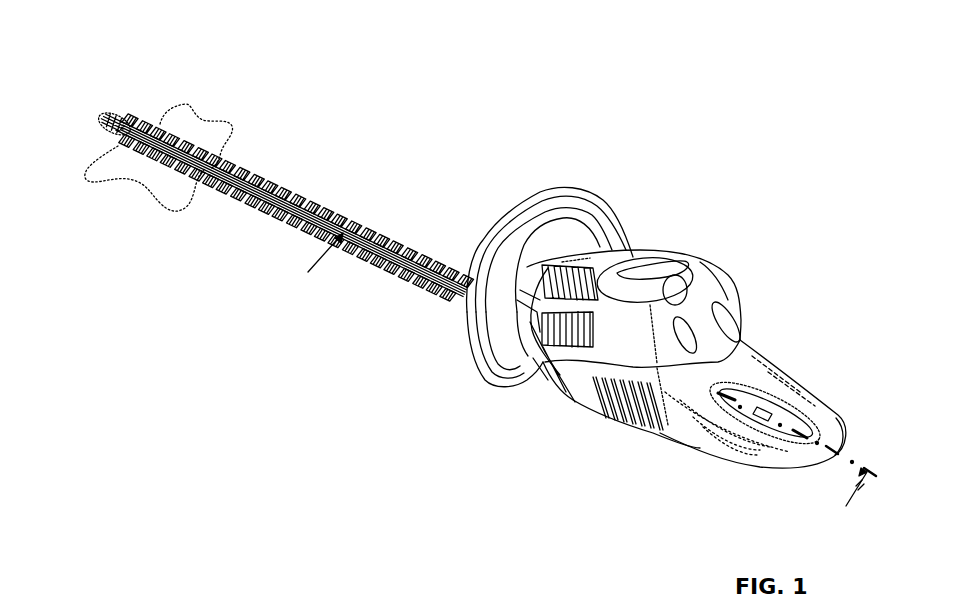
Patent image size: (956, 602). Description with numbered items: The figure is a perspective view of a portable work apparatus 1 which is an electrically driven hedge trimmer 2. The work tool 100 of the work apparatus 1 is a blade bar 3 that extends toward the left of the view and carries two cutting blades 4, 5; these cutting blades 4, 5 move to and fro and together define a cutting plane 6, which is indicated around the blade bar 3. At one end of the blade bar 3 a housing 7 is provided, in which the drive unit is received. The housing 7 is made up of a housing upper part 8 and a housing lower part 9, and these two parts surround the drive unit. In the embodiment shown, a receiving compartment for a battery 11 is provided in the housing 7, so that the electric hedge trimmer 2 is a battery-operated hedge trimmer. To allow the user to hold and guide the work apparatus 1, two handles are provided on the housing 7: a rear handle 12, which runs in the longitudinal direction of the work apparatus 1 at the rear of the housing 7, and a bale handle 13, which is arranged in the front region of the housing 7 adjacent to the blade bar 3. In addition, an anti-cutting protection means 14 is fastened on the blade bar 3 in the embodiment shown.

The work tool 100 is at (272, 168).
The portable work apparatus 1 is at (641, 215).
The hedge trimmer 2 is at (742, 322).
The blade bar 3 is at (162, 137).
The cutting blade 4 is at (235, 197).
The cutting blade 5 is at (208, 182).
The cutting plane 6 is at (124, 154).
The housing 7 is at (715, 265).
The housing upper part 8 is at (722, 297).
The housing lower part 9 is at (585, 396).
The battery 11 is at (657, 263).
The rear handle 12 is at (772, 457).
The bale handle 13 is at (477, 312).
The anti-cutting protection means 14 is at (400, 260).